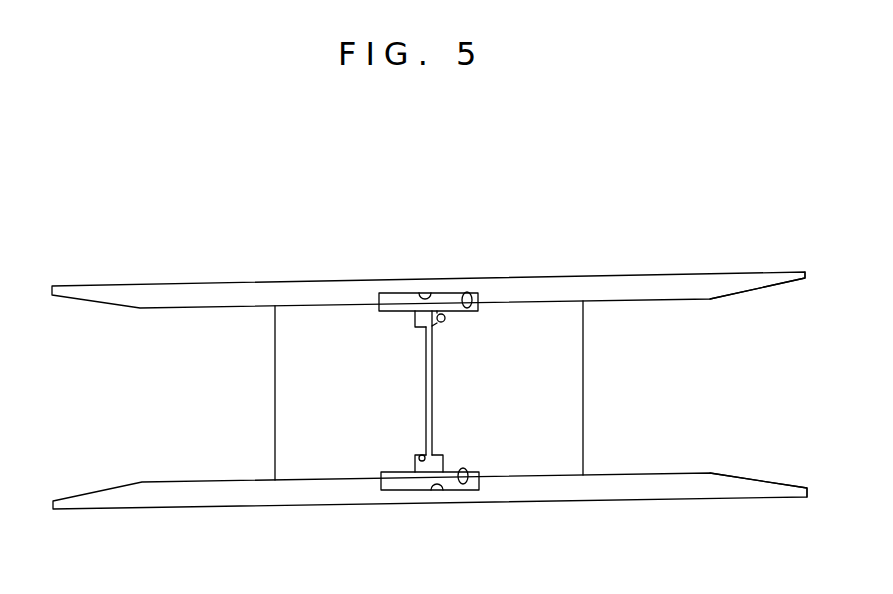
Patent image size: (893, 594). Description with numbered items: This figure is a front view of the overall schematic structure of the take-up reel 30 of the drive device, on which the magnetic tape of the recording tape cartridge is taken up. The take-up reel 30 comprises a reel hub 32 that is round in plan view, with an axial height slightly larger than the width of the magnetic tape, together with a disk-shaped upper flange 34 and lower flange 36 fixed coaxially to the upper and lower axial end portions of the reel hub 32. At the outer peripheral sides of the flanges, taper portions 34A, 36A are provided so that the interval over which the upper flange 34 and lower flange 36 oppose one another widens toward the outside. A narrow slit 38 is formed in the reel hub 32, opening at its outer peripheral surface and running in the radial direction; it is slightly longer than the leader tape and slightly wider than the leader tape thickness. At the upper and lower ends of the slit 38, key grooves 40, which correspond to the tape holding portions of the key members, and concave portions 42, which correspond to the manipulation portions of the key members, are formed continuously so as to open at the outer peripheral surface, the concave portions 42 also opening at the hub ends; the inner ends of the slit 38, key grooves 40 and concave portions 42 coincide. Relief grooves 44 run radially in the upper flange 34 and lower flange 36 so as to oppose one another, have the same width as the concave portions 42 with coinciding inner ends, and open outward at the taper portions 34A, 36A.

The take-up reel 30 is at (536, 213).
The reel hub 32 is at (583, 368).
The upper flange 34 is at (660, 280).
The taper portion 34A is at (766, 286).
The lower flange 36 is at (661, 476).
The taper portion 36A is at (750, 478).
The slit 38 is at (430, 385).
The key groove 40 is at (446, 326).
The concave portion 42 is at (470, 307).
The relief groove 44 is at (421, 290).